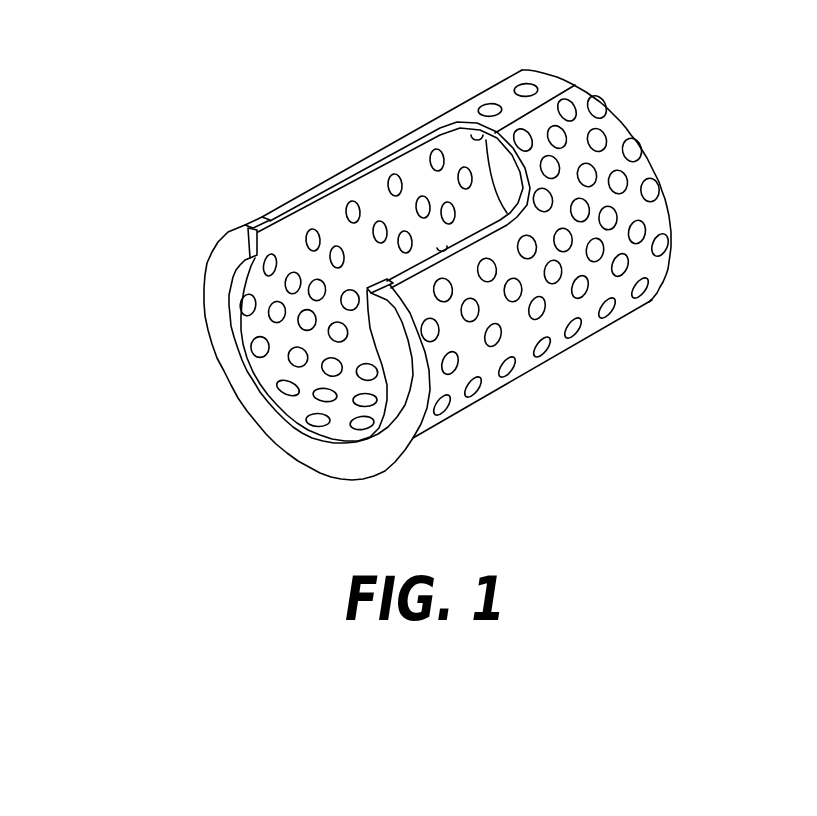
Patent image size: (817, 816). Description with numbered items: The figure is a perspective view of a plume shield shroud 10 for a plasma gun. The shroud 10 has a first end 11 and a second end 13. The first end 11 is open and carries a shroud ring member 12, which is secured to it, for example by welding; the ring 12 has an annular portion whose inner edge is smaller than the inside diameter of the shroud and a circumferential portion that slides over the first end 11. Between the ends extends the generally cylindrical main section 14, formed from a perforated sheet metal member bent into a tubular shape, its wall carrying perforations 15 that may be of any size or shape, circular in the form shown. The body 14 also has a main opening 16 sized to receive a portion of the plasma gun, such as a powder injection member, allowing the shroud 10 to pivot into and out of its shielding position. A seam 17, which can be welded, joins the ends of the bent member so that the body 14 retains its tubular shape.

The plume shield shroud 10 is at (224, 163).
The first end 11 is at (282, 450).
The shroud ring member 12 is at (204, 268).
The second end 13 is at (675, 206).
The main section 14 is at (637, 308).
The perforations 15 is at (594, 144).
The main opening 16 is at (350, 178).
The seam 17 is at (490, 95).